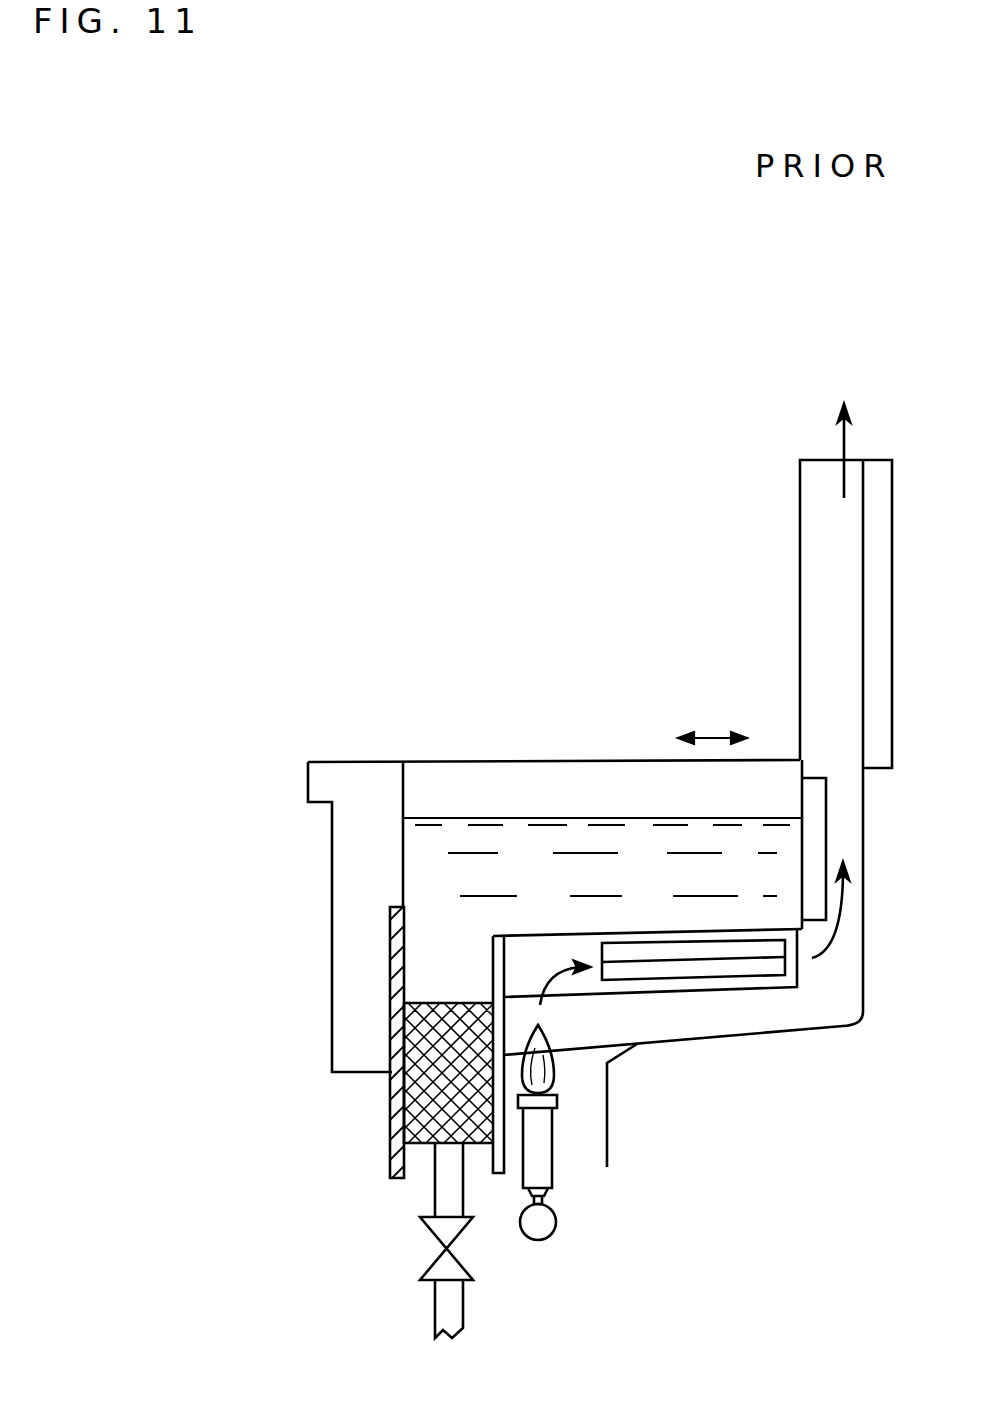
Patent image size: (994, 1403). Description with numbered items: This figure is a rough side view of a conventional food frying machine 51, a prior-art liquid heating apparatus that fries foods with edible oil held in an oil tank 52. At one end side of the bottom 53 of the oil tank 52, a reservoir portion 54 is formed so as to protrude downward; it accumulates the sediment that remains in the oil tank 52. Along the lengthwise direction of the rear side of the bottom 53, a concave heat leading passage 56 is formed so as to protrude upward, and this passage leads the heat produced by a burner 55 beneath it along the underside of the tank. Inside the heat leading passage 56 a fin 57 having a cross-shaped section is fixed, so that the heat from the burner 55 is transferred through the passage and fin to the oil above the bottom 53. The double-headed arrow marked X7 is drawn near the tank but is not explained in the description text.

The food frying machine 51 is at (387, 620).
The oil tank 52 is at (405, 790).
The bottom 53 is at (645, 933).
The reservoir portion 54 is at (405, 1122).
The burner 55 is at (545, 1131).
The heat leading passage 56 is at (543, 947).
The fin 57 is at (747, 965).
The direction indicator X7 is at (717, 736).